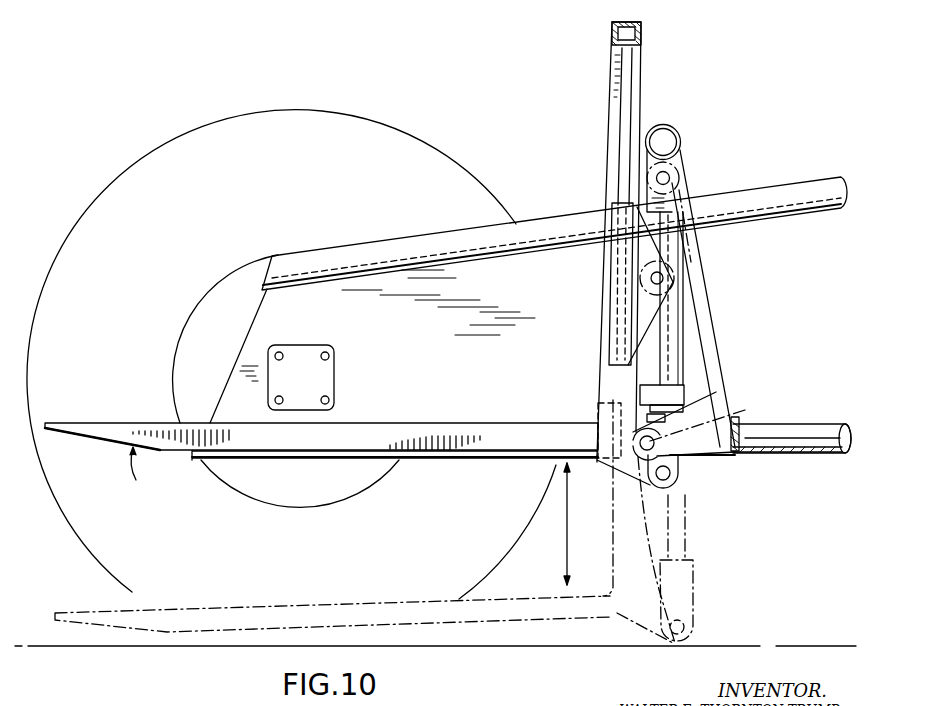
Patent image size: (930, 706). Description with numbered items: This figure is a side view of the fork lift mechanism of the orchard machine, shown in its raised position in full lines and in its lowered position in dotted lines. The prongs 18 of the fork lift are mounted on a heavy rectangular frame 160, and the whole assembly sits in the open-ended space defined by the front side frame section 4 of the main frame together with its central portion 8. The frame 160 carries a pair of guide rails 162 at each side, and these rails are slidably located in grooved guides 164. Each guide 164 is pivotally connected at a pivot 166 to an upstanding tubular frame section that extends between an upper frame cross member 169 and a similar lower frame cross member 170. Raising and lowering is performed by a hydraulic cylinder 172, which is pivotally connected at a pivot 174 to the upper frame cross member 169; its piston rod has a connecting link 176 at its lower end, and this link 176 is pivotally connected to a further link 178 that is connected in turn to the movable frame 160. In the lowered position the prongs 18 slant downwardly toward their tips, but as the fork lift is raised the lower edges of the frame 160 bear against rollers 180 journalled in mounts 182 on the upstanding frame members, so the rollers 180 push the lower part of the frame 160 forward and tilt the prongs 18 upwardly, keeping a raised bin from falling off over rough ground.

The side frame section 4 is at (397, 235).
The central portion 8 is at (824, 457).
The prongs 18 is at (122, 423).
The rectangular frame 160 is at (598, 387).
The guide rails 162 is at (630, 67).
The grooved guides 164 is at (610, 282).
The pivotal connection 166 is at (661, 277).
The upper frame cross member 169 is at (668, 125).
The lower frame cross member 170 is at (737, 447).
The hydraulic cylinder 172 is at (675, 326).
The pivotal connection 174 is at (669, 177).
The connecting link 176 is at (676, 482).
The link 178 is at (632, 478).
The rollers 180 is at (741, 411).
The mounts 182 is at (701, 405).